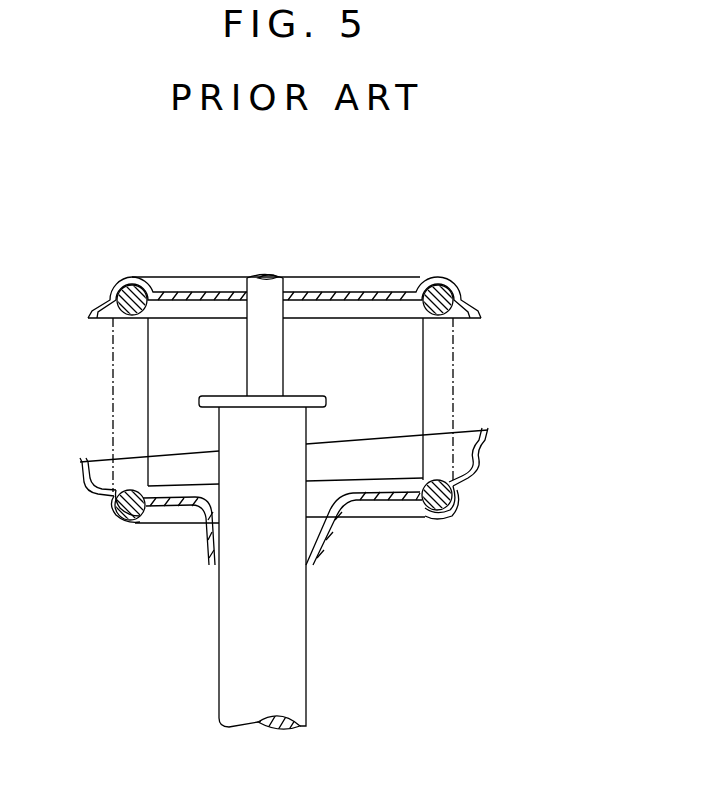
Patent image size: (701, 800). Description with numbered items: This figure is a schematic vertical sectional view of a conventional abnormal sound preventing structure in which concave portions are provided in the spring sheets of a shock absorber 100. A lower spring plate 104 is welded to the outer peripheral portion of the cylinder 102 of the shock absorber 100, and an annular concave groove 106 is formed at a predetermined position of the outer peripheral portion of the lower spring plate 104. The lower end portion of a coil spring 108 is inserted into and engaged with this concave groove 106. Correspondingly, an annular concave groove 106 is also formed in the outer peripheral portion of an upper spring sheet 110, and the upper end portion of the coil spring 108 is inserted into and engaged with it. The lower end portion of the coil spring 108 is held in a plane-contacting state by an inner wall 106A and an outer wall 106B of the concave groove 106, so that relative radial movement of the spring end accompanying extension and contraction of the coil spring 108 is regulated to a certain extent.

The shock absorber 100 is at (216, 654).
The cylinder 102 is at (293, 650).
The lower spring plate 104 is at (490, 424).
The annular concave groove 106 is at (112, 280).
The inner wall 106A is at (152, 520).
The outer wall 106B is at (110, 510).
The coil spring 108 is at (112, 383).
The upper spring sheet 110 is at (388, 276).